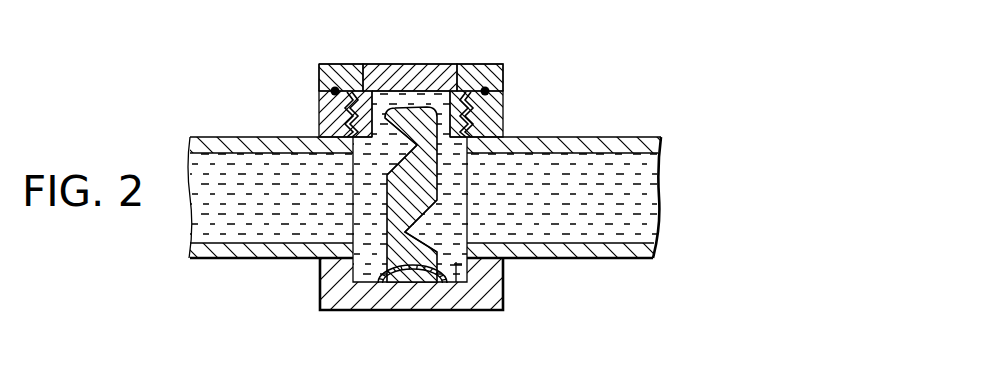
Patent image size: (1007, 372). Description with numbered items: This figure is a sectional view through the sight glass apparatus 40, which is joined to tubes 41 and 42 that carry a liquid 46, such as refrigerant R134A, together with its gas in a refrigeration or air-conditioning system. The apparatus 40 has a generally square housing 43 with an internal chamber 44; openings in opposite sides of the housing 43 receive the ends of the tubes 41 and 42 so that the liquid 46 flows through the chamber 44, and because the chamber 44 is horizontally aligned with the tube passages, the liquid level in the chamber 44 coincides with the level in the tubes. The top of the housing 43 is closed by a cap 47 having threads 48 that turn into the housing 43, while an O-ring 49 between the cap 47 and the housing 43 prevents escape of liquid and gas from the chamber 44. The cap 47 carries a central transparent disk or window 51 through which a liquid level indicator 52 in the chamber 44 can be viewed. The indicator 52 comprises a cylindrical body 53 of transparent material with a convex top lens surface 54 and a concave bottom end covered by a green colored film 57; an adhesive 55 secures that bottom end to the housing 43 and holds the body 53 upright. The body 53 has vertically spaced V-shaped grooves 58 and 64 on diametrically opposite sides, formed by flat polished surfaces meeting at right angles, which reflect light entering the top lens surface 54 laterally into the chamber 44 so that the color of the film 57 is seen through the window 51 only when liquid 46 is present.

The sight glass apparatus 40 is at (538, 70).
The tube 41 is at (240, 137).
The tube 42 is at (620, 143).
The housing 43 is at (333, 290).
The internal chamber 44 is at (456, 282).
The liquid 46 is at (652, 204).
The cap 47 is at (334, 63).
The threads 48 is at (472, 125).
The O-ring 49 is at (322, 97).
The transparent disk or window 51 is at (420, 63).
The liquid level indicator 52 is at (405, 116).
The cylindrical body 53 is at (410, 197).
The top lens surface 54 is at (431, 100).
The adhesive 55 is at (378, 273).
The colored film 57 is at (407, 270).
The V-shaped groove 58 is at (410, 153).
The second groove 64 is at (445, 233).